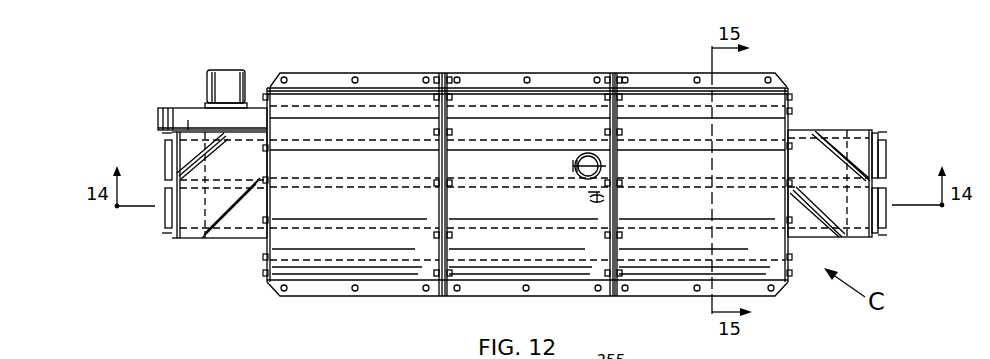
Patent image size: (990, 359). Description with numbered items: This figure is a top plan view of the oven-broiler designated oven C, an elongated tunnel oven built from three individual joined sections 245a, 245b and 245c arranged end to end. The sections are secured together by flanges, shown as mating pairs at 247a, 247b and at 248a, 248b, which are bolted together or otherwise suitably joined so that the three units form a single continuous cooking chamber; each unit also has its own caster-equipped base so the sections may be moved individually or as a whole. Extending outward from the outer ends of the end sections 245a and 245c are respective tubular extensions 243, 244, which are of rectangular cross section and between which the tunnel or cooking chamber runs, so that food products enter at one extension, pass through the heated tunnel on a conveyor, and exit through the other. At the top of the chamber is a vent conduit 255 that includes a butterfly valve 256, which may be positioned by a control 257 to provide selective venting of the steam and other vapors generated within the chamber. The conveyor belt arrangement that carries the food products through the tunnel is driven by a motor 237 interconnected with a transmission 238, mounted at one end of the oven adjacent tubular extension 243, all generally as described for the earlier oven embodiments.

The motor 237 is at (208, 72).
The transmission 238 is at (186, 108).
The tubular extension 243 is at (200, 238).
The tubular extension 244 is at (853, 237).
The oven section 245a is at (392, 304).
The oven section 245b is at (499, 305).
The oven section 245c is at (637, 305).
The flange 247a is at (438, 110).
The flange 247b is at (448, 110).
The flange 248a is at (609, 110).
The flange 248b is at (618, 110).
The vent conduit 255 is at (580, 174).
The butterfly valve 256 is at (575, 164).
The control 257 is at (603, 167).